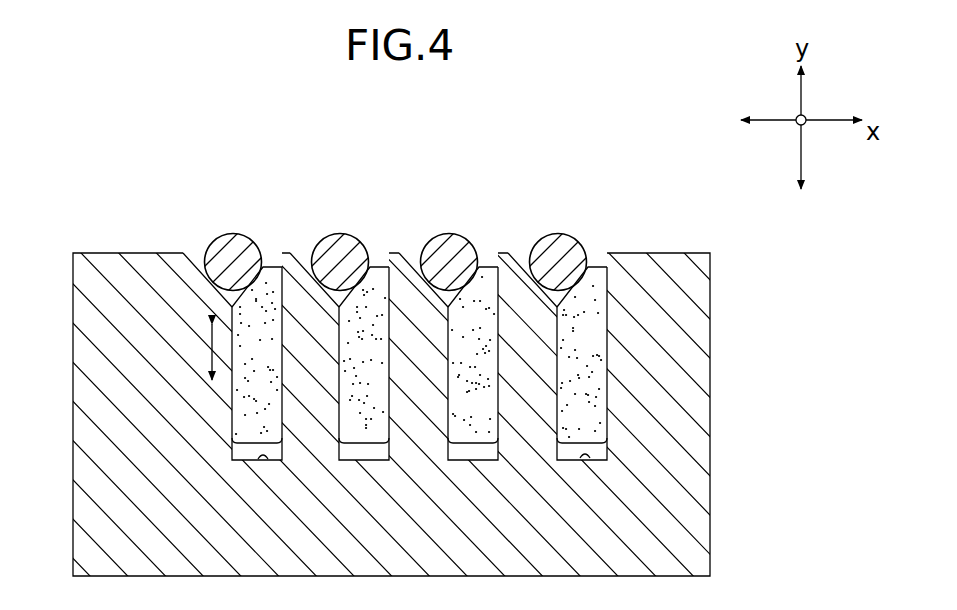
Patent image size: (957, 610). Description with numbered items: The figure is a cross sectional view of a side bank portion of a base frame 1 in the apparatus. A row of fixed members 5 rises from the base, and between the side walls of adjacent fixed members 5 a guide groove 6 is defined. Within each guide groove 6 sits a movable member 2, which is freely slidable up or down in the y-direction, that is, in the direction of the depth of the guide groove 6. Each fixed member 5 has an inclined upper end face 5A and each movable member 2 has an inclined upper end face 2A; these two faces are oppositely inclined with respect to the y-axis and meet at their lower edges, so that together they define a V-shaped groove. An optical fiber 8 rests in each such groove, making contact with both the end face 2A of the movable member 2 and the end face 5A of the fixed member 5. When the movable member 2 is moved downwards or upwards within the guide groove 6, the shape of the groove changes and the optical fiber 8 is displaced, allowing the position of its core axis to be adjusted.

The substrate block 1 is at (736, 458).
The movable member 2 is at (360, 370).
The inclined upper end face of movable member 2A is at (277, 258).
The fixed member 5 is at (280, 418).
The inclined upper end face of fixed member 5A is at (197, 257).
The guide groove 6 is at (250, 462).
The optical fiber 8 is at (245, 234).